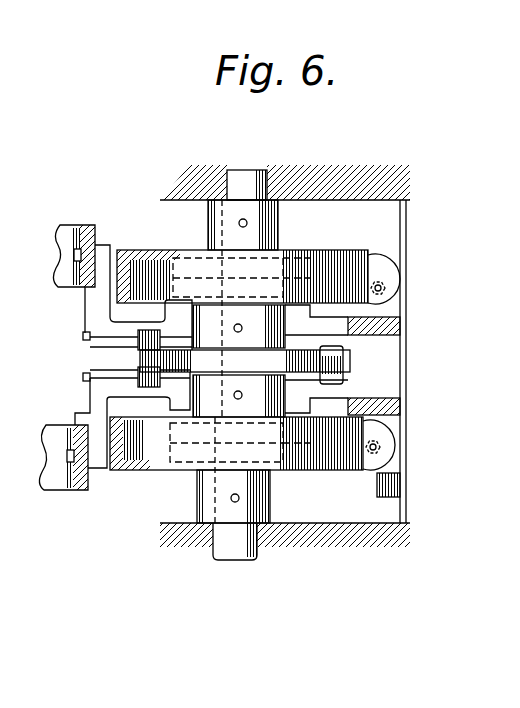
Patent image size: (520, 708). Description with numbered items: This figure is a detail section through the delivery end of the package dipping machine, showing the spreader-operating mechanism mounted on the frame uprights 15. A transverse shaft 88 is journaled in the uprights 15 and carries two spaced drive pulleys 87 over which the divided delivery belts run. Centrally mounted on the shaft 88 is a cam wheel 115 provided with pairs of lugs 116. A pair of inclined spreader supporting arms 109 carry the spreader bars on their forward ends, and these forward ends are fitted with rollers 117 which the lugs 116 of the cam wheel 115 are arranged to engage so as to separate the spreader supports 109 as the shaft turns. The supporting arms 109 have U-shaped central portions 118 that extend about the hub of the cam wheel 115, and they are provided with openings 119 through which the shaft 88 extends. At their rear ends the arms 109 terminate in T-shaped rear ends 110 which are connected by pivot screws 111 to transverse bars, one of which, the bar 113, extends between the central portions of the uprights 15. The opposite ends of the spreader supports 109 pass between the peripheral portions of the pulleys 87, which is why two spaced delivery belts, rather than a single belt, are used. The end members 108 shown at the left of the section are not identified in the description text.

The uprights 15 is at (297, 200).
The drive pulleys 87 is at (373, 253).
The transverse shaft 88 is at (240, 563).
The end member 108 is at (68, 232).
The inclined supporting arms 109 is at (102, 303).
The T-shaped rear ends 110 is at (397, 327).
The pivot screws 111 is at (390, 287).
The transverse bar 113 is at (400, 495).
The cam wheel 115 is at (330, 360).
The lugs 116 is at (345, 375).
The rollers 117 is at (140, 378).
The U-shaped central portions 118 is at (302, 272).
The openings 119 is at (217, 287).